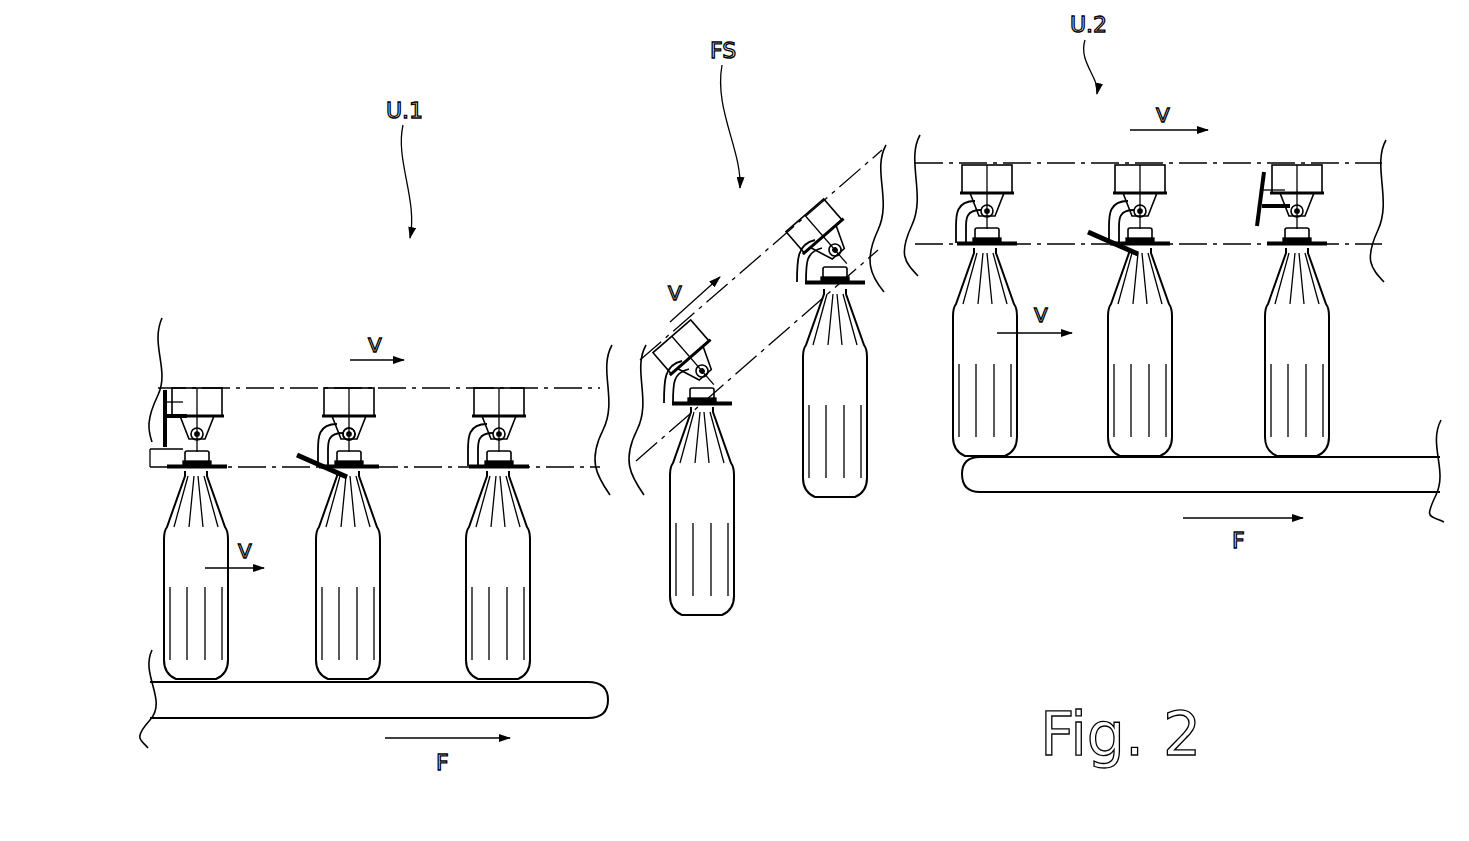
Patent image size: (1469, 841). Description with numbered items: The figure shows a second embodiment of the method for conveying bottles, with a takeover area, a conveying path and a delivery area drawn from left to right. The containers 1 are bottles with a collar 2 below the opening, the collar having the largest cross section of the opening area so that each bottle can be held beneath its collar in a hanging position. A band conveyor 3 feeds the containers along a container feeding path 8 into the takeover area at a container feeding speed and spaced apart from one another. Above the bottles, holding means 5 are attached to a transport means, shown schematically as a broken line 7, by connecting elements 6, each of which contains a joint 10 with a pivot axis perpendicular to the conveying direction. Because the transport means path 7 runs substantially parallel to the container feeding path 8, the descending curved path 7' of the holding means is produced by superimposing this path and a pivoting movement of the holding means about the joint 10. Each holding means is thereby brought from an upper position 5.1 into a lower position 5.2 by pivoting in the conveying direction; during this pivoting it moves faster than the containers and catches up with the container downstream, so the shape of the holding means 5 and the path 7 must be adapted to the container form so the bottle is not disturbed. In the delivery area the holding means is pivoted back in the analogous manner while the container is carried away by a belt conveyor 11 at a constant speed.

The container 1 is at (1312, 326).
The collar 2 is at (178, 480).
The band conveyor 3 is at (580, 683).
The holding means 5 is at (1110, 250).
The upper position of the holding means 5.1 is at (167, 394).
The lower position of the holding means 5.2 is at (515, 472).
The connecting element 6 is at (298, 402).
The transport means path 7 is at (303, 379).
The curved path 7' is at (279, 445).
The container feeding path 8 is at (182, 492).
The joint 10 is at (356, 433).
The belt conveyor 11 is at (1397, 457).